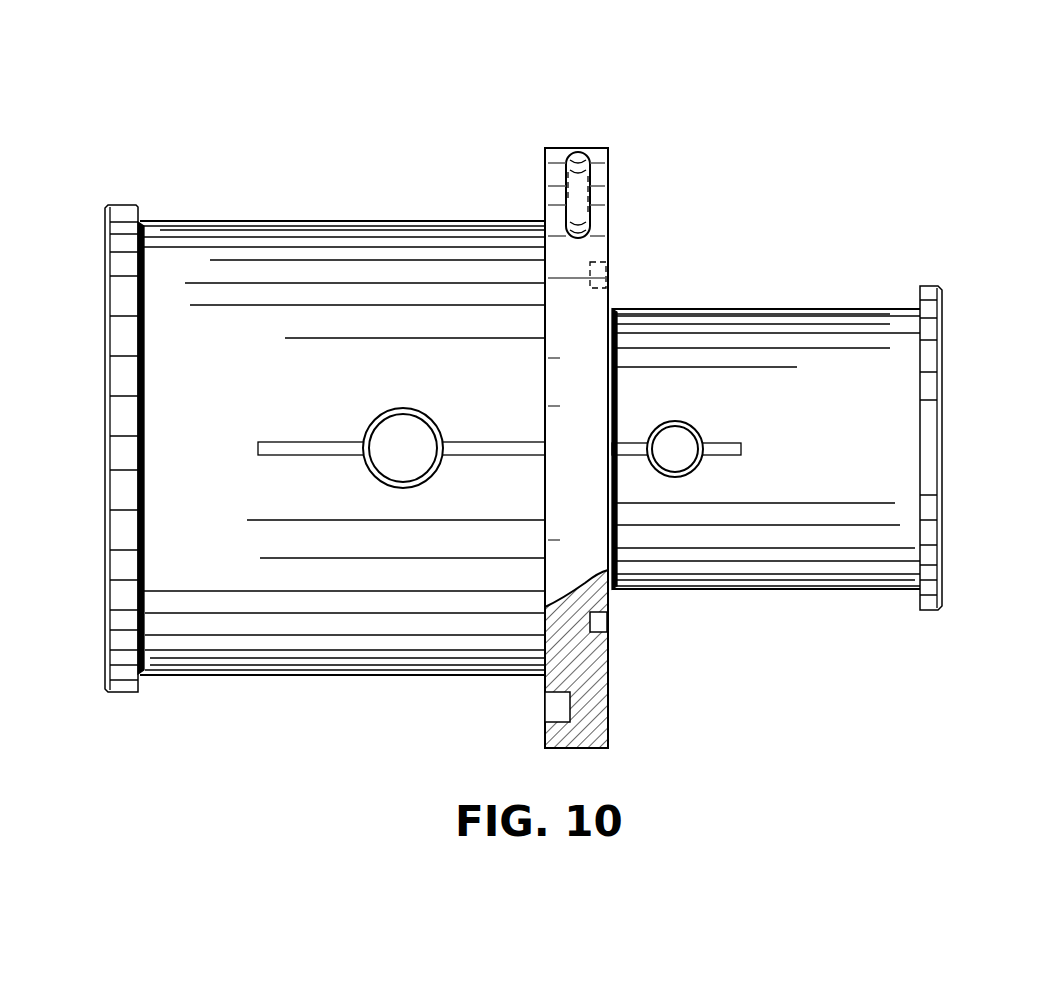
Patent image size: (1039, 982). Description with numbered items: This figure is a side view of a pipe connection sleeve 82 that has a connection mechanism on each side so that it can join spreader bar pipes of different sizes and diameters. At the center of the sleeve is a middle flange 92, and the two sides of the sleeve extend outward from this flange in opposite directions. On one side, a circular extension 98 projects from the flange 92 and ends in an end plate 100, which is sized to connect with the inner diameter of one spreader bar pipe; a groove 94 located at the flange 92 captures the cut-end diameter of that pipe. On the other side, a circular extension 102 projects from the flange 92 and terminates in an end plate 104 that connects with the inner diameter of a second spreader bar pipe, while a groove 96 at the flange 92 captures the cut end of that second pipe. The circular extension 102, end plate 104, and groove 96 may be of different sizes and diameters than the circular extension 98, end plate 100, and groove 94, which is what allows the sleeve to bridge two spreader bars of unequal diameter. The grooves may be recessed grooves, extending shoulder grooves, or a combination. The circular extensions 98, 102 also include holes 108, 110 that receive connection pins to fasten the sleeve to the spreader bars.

The pipe connection sleeve 82 is at (649, 81).
The middle flange 92 is at (568, 150).
The groove 94 is at (608, 622).
The groove 96 is at (545, 708).
The circular extension 98 is at (888, 308).
The end plate 100 is at (942, 426).
The circular extension 102 is at (180, 220).
The end plate 104 is at (106, 423).
The hole 108 is at (674, 421).
The hole 110 is at (404, 408).